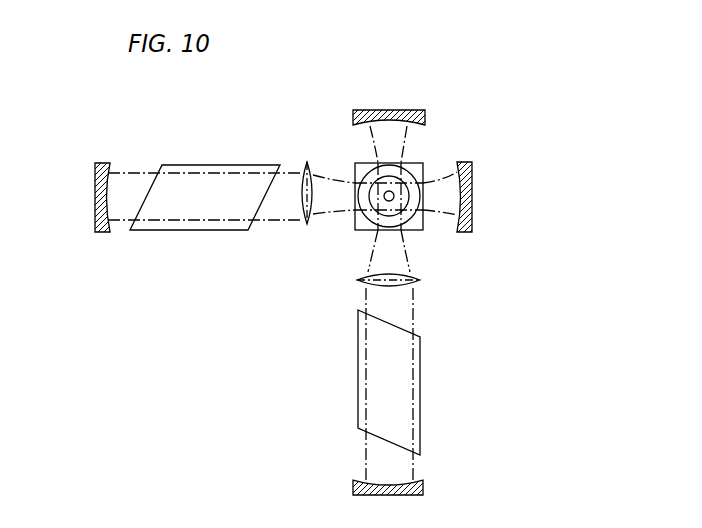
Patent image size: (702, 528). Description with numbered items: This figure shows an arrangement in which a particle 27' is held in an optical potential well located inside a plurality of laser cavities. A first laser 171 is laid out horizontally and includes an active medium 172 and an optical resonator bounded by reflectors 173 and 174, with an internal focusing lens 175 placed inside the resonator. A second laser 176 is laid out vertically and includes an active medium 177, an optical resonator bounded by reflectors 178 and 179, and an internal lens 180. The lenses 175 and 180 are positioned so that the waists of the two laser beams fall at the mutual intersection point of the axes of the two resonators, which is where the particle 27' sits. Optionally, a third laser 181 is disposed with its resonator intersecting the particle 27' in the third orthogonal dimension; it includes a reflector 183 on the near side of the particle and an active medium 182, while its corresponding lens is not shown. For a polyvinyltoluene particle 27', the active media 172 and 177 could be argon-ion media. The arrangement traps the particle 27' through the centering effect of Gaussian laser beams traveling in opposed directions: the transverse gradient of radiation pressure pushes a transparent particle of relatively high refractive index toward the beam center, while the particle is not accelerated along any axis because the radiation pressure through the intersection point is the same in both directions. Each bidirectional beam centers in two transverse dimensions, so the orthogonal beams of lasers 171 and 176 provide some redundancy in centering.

The first laser 171 is at (234, 151).
The active medium 172 is at (192, 232).
The reflector 173 is at (98, 162).
The reflector 174 is at (472, 211).
The internal focusing lens 175 is at (307, 224).
The second laser 176 is at (329, 387).
The active medium 177 is at (420, 397).
The reflector 178 is at (425, 112).
The reflector 179 is at (353, 487).
The internal lens 180 is at (360, 280).
The third laser 181 is at (423, 163).
The active medium 182 is at (404, 221).
The reflector 183 is at (423, 225).
The particle 27' is at (356, 165).